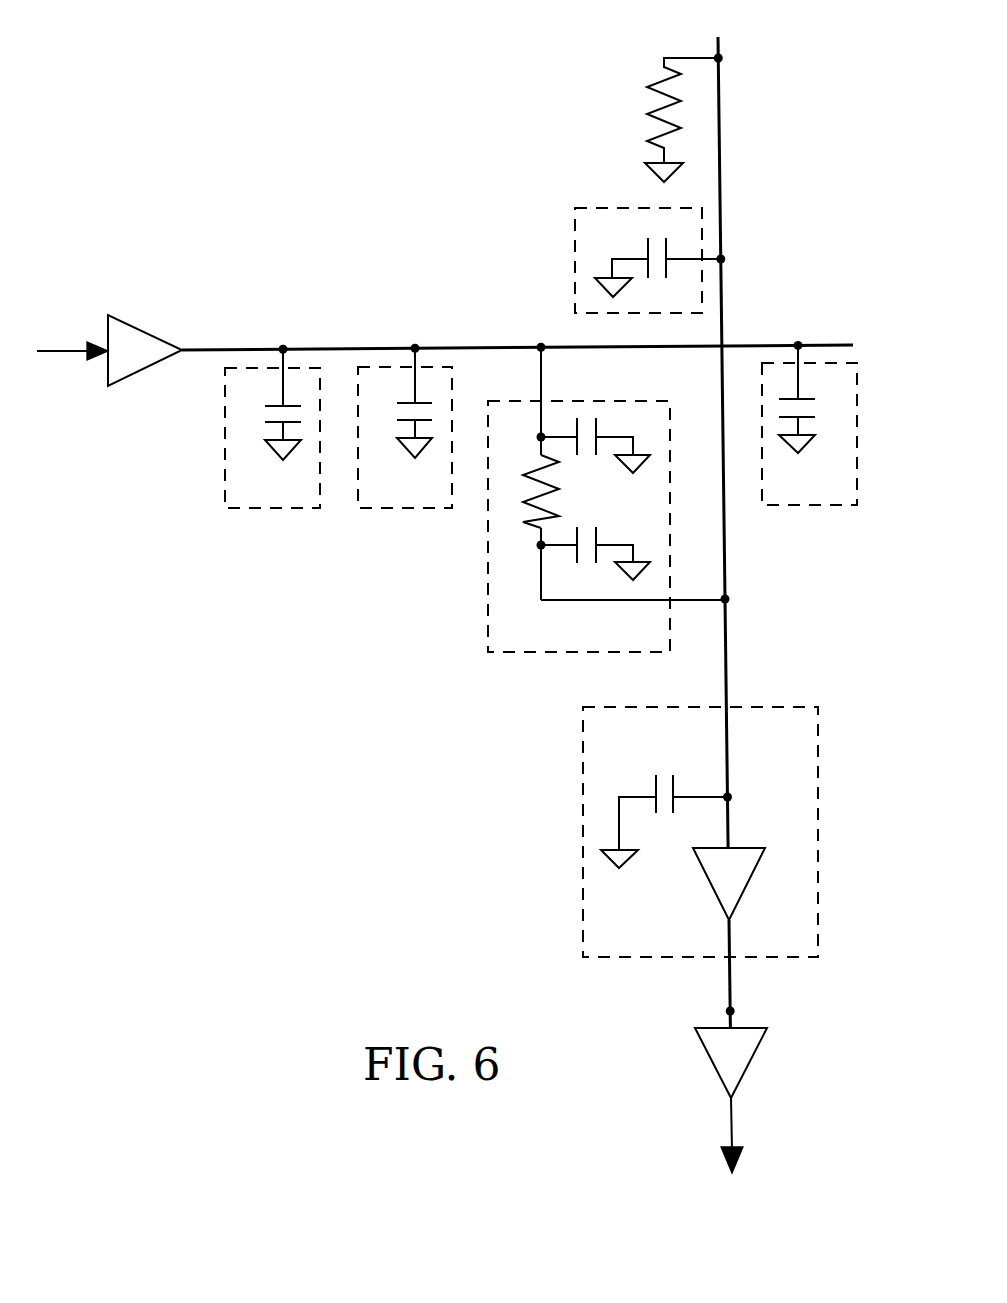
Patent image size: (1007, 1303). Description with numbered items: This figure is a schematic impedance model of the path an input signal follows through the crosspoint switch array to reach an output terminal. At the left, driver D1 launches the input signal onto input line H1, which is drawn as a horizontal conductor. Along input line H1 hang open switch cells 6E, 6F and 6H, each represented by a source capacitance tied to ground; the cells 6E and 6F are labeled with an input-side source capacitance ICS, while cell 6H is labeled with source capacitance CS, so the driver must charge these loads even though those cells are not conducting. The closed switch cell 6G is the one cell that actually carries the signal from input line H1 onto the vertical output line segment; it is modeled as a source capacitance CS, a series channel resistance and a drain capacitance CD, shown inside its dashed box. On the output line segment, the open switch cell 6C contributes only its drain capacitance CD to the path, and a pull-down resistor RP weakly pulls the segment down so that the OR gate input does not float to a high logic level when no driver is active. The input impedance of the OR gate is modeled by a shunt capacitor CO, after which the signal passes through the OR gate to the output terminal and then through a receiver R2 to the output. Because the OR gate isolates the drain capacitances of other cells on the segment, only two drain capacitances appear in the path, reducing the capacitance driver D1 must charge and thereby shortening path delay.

The driver D1 is at (148, 355).
The pull-down resistor RP is at (662, 120).
The drain capacitance CD is at (692, 302).
The open switch cell 6C is at (633, 399).
The input line H1 is at (828, 343).
The input stub capacitance ICS is at (328, 404).
The source capacitance CS is at (693, 414).
The open switch cell 6E is at (328, 428).
The open switch cell 6F is at (437, 496).
The closed switch cell 6G is at (667, 498).
The open switch cell 6H is at (820, 492).
The shunt capacitor CO is at (666, 808).
The receiver R2 is at (731, 1063).